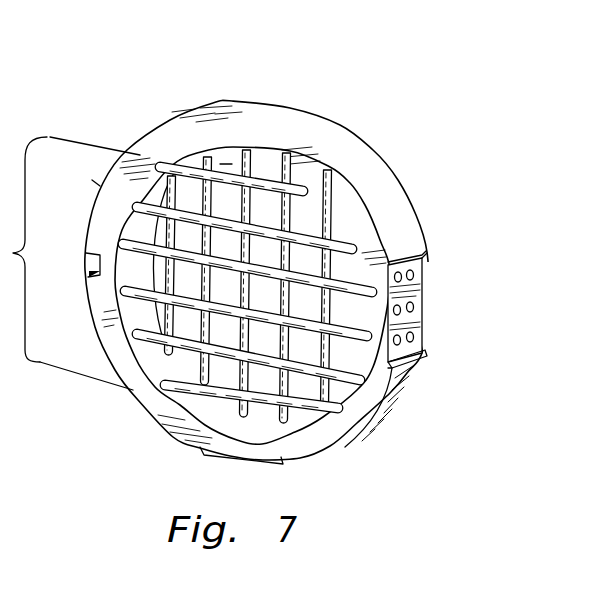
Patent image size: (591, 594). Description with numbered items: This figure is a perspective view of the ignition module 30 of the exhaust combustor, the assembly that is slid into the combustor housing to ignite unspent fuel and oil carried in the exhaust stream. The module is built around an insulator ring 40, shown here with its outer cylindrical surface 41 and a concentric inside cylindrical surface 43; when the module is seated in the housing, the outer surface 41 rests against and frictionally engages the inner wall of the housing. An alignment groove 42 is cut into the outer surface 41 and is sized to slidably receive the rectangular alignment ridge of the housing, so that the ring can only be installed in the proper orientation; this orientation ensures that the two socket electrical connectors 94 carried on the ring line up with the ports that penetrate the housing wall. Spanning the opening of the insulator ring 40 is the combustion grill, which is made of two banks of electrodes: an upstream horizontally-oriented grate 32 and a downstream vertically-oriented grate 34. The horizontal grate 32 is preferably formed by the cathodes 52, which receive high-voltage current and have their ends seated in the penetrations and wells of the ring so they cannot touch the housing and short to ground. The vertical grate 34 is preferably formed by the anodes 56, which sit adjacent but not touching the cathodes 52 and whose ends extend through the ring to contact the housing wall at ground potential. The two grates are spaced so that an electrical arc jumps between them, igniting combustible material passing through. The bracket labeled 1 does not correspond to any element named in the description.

The frame 1 is at (70, 263).
The ignition module 30 is at (257, 252).
The horizontally-oriented grate 32 is at (228, 158).
The vertically-oriented grate 34 is at (407, 398).
The insulator ring 40 is at (88, 174).
The outer cylindrical surface 41 is at (310, 125).
The alignment groove 42 is at (87, 258).
The inside cylindrical surface 43 is at (147, 358).
The cathodes 52 is at (295, 228).
The anodes 56 is at (248, 375).
The socket electrical connectors 94 is at (414, 292).